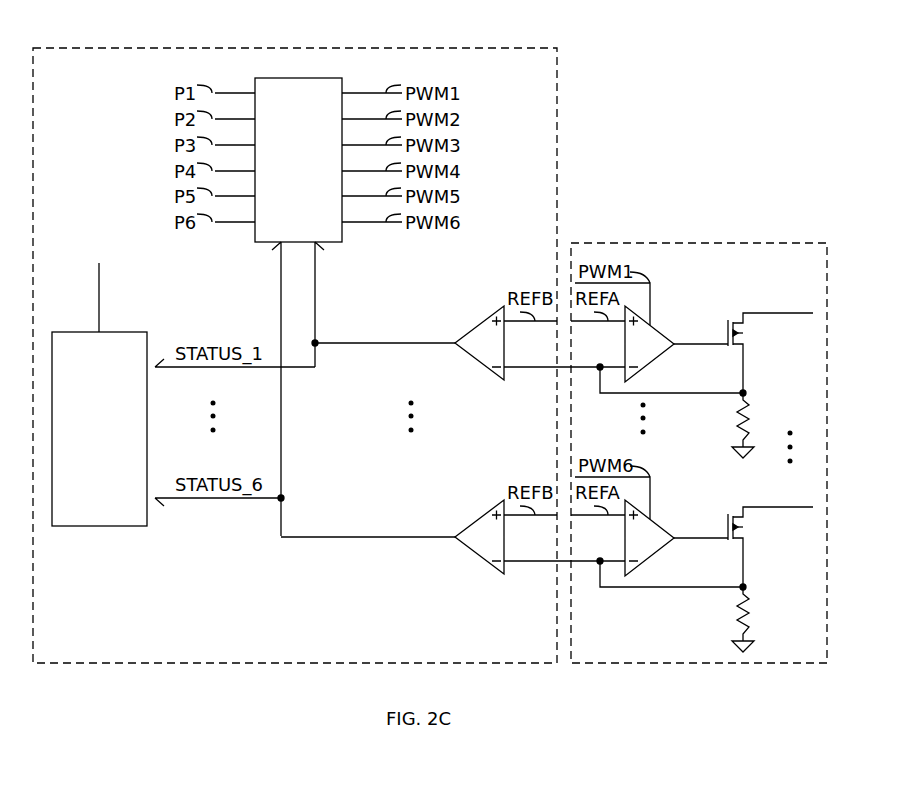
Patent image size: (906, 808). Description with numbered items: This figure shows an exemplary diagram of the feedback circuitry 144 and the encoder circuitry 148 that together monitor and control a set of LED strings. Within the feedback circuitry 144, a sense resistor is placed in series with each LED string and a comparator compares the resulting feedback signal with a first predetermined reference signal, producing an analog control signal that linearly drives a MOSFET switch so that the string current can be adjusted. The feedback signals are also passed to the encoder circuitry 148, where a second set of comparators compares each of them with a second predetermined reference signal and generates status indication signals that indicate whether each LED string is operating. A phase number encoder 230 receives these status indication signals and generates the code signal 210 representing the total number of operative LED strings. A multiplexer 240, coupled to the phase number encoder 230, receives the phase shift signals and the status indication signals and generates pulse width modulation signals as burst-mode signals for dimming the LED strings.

The encoder circuitry 148 is at (557, 107).
The feedback circuitry 144 is at (718, 243).
The multiplexer 240 is at (298, 160).
The phase number encoder 230 is at (99, 429).
The code signal 210 is at (99, 292).